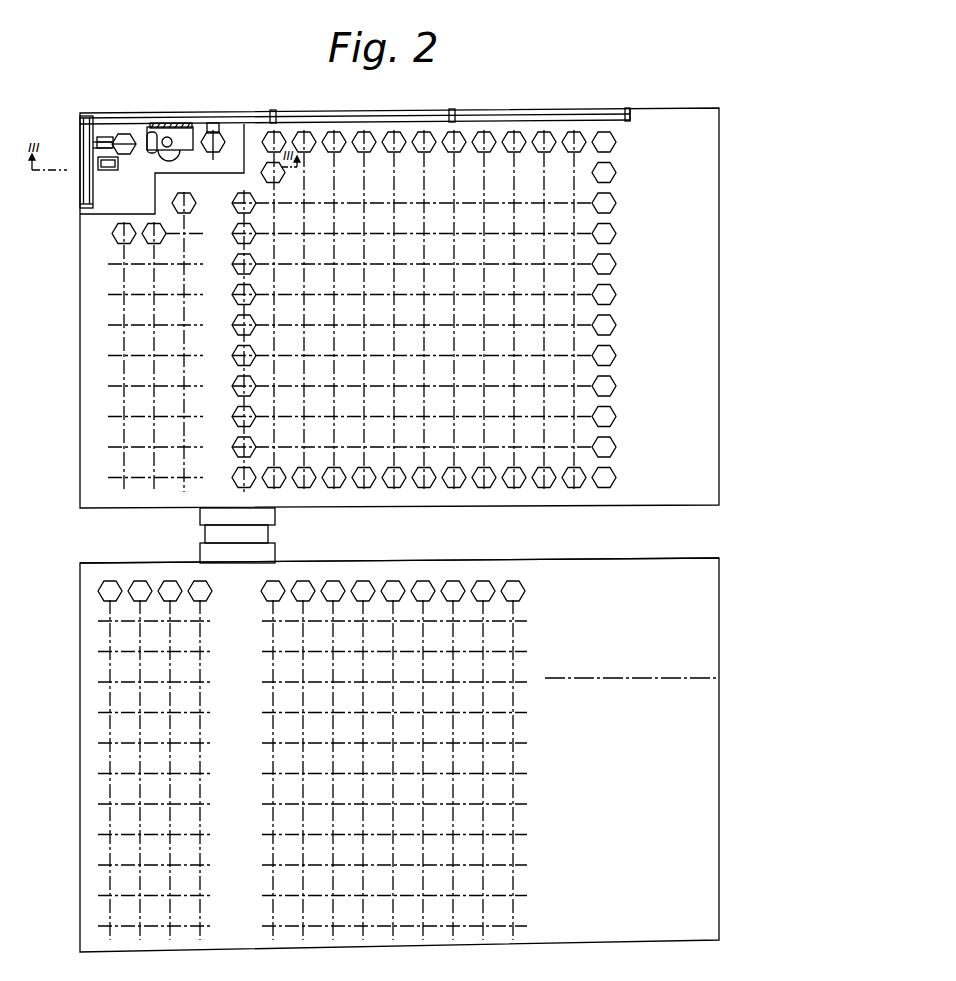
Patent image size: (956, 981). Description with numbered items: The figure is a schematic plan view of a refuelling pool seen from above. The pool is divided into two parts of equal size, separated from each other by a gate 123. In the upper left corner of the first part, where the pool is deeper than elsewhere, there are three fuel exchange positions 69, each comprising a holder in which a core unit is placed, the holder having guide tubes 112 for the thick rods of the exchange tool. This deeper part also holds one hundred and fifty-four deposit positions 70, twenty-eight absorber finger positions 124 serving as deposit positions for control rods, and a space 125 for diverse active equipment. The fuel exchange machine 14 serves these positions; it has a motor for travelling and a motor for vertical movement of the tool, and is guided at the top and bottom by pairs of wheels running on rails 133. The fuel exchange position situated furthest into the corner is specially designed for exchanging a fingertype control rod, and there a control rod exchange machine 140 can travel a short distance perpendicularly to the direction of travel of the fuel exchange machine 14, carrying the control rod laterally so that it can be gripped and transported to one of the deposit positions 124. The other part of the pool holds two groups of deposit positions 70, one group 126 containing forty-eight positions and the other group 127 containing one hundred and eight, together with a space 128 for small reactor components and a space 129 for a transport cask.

The fuel exchange machine 14 is at (167, 136).
The fuel exchange position 69 is at (217, 133).
The deposit position 70 is at (463, 163).
The guide tube 112 is at (614, 131).
The rail 133 is at (347, 118).
The control rod exchange machine 140 is at (95, 168).
The absorber finger position 124 is at (130, 341).
The space for diverse active equipment 125 is at (692, 322).
The gate 123 is at (265, 535).
The group of deposit positions 126 is at (122, 728).
The group of deposit positions 127 is at (432, 633).
The space for small reactor components 128 is at (695, 628).
The space for a transport cask 129 is at (695, 812).